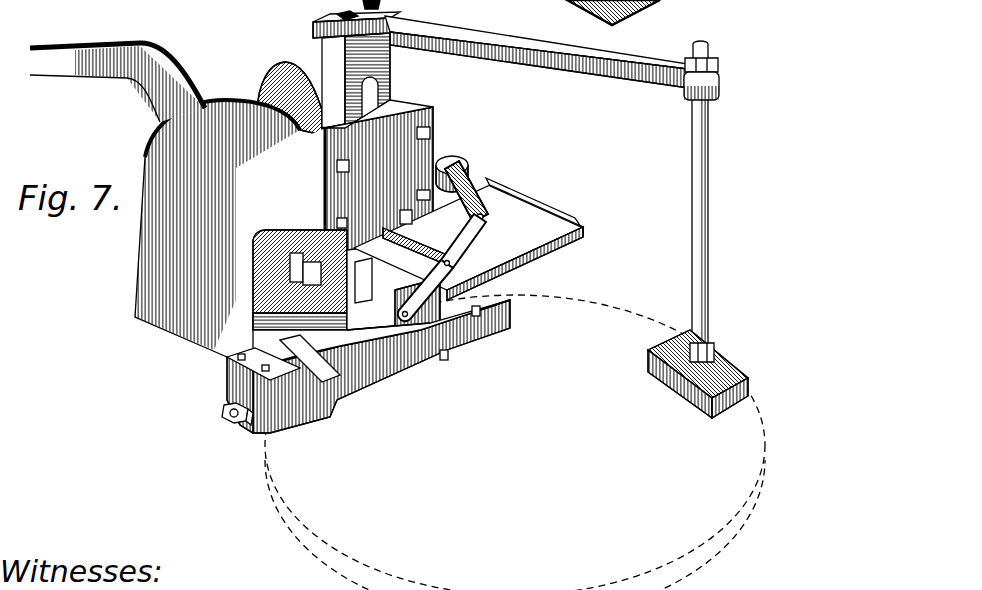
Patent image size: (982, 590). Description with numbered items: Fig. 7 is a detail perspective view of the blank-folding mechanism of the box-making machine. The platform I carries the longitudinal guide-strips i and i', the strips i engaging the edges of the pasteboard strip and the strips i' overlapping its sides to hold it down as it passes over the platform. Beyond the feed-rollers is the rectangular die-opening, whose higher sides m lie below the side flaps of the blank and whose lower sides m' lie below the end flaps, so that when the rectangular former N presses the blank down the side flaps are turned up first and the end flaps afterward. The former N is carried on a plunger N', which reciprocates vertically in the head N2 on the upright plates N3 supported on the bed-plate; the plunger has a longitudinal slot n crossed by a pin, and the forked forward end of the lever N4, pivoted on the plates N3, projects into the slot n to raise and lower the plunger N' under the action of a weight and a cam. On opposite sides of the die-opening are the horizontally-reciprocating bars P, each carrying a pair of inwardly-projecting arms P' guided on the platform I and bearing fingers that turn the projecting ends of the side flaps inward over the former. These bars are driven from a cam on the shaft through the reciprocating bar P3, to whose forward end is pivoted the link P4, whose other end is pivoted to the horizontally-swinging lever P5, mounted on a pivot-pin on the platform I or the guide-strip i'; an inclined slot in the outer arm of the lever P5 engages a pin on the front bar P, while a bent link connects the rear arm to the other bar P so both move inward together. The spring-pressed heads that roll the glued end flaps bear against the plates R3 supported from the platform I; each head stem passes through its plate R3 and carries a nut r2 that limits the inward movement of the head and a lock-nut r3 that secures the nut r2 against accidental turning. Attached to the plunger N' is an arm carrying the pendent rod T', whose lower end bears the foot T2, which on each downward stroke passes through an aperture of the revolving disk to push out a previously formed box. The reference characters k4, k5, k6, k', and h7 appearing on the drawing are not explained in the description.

The lever N4 is at (117, 82).
The upright plates N3 is at (277, 82).
The head N2 is at (310, 150).
The plunger N' is at (368, 64).
The former N is at (343, 215).
The longitudinal slot n is at (382, 95).
The pendent rod T' is at (554, 180).
The foot T2 is at (724, 372).
The reciprocating bar P3 is at (448, 159).
The link P4 is at (458, 190).
The horizontally-swinging lever P5 is at (485, 243).
The horizontally-reciprocating bars P is at (363, 333).
The inwardly-projecting arms P' is at (381, 366).
The stud k4 is at (403, 212).
The stud k5 is at (480, 312).
The lug k6 is at (448, 358).
The slide bar k' is at (310, 356).
The longitudinal guide-strips i is at (545, 197).
The longitudinal guide-strips i' is at (533, 202).
The platform I is at (547, 260).
The sides of die-opening m is at (308, 279).
The sides of die-opening m' is at (415, 259).
The block h7 is at (384, 302).
The plates R3 is at (227, 377).
The lock-nut r3 is at (222, 411).
The nut r2 is at (238, 423).